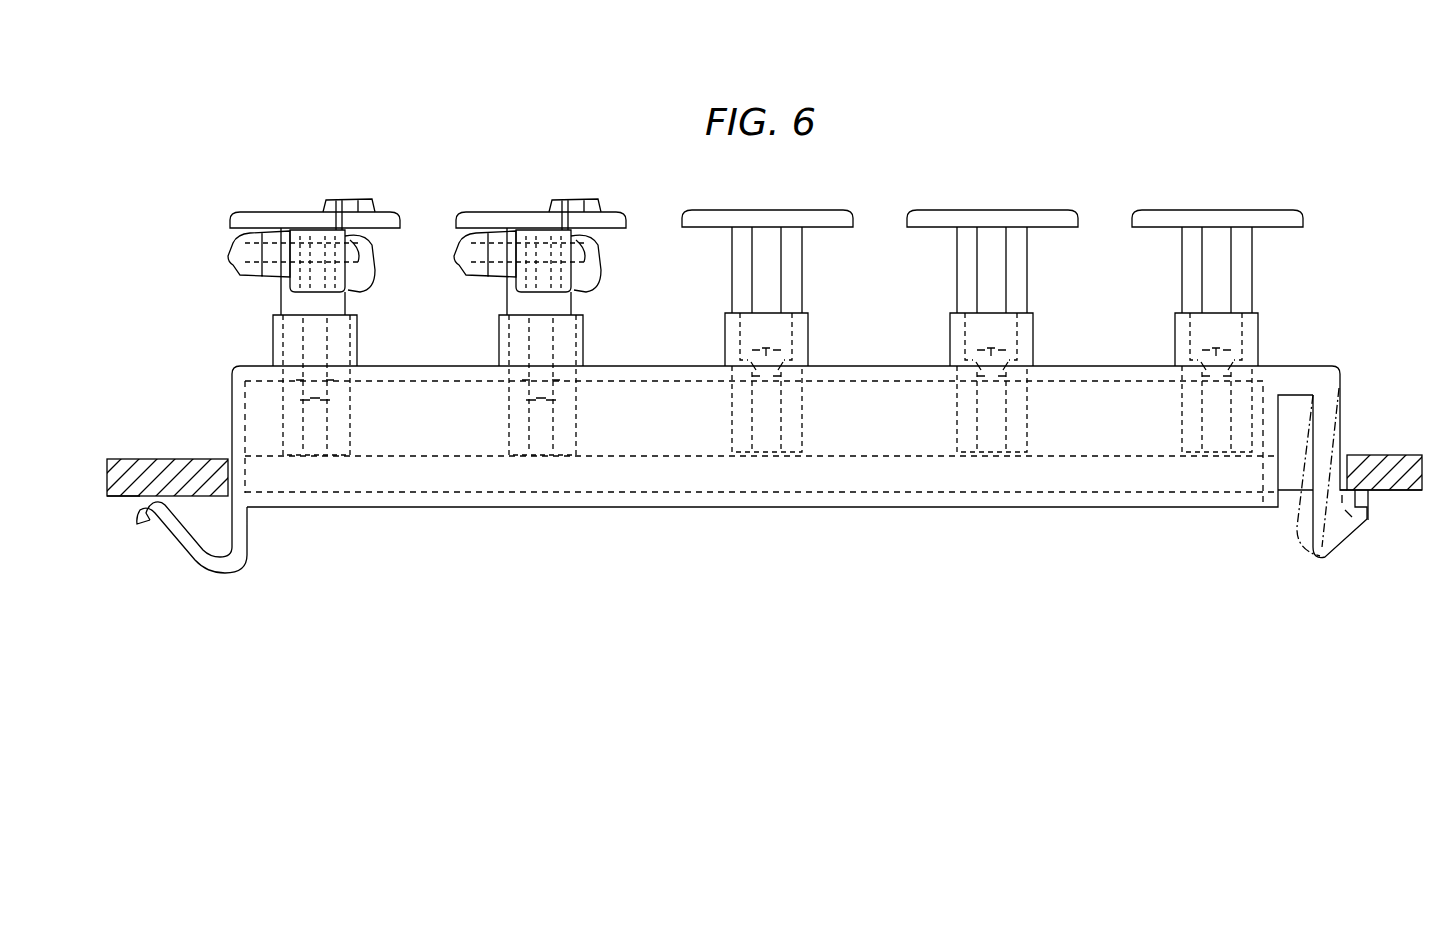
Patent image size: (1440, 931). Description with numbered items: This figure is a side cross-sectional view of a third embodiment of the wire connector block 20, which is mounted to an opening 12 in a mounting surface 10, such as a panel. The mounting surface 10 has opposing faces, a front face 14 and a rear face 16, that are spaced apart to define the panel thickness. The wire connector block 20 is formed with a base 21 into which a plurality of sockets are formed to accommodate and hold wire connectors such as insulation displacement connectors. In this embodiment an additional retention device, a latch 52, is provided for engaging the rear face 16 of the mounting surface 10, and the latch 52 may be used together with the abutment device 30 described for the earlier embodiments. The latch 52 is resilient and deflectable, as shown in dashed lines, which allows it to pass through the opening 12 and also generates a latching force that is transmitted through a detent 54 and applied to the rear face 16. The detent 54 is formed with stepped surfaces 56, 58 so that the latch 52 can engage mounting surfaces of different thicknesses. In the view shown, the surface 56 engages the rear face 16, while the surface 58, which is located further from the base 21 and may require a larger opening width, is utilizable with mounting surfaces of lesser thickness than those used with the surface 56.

The mounting surface 10 is at (1385, 455).
The opening 12 is at (623, 473).
The front face 14 is at (160, 459).
The rear face 16 is at (122, 498).
The wire connector block 20 is at (791, 436).
The base 21 is at (655, 398).
The abutment device 30 is at (232, 575).
The latch 52 is at (1297, 520).
The detent 54 is at (1358, 535).
The stepped surface 56 is at (1350, 488).
The stepped surface 58 is at (1373, 500).